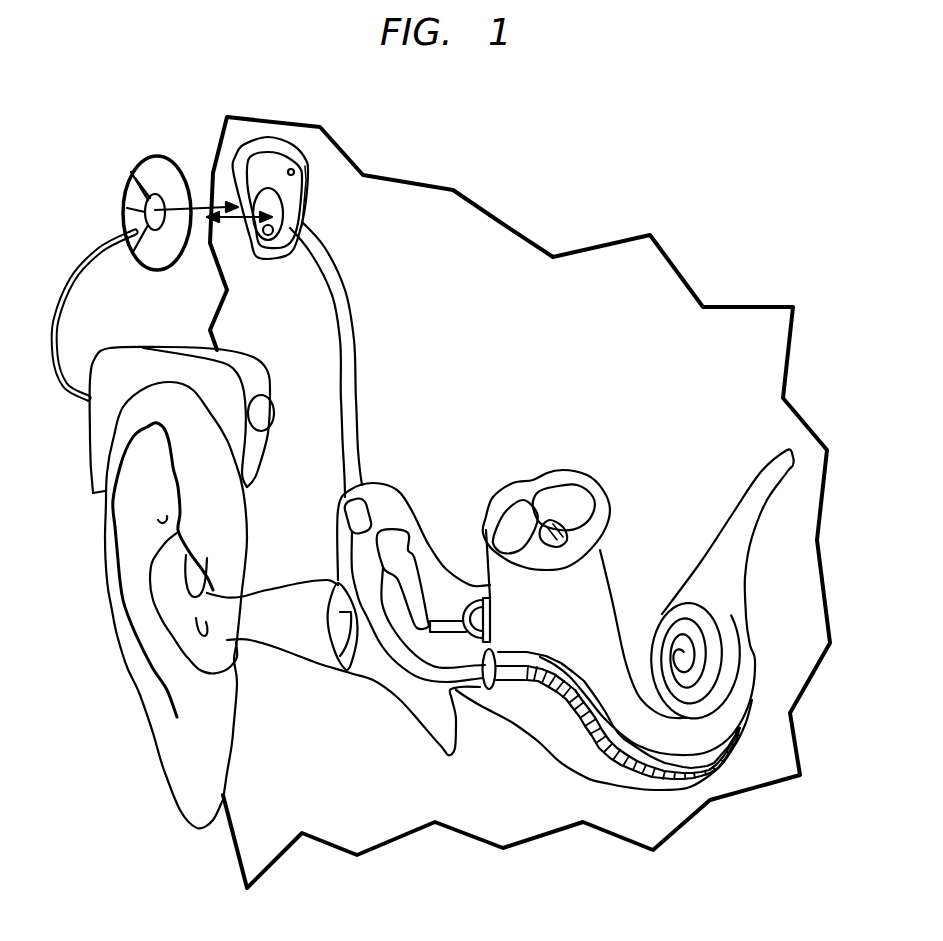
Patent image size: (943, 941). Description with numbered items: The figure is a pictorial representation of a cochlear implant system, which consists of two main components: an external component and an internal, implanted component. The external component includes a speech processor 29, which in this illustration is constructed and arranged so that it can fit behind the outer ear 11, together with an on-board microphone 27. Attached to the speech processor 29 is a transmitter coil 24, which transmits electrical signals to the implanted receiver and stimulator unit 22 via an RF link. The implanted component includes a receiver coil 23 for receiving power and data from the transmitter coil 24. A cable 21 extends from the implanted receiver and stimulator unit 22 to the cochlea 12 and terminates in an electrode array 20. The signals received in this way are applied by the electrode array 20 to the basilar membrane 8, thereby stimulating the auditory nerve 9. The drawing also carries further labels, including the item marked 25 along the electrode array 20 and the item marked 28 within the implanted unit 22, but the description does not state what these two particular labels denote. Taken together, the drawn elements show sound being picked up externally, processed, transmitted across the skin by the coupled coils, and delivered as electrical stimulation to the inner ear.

The basilar membrane 8 is at (538, 652).
The auditory nerve 9 is at (745, 487).
The outer ear 11 is at (176, 759).
The cochlea 12 is at (757, 670).
The electrode array 20 is at (598, 749).
The cable 21 is at (356, 372).
The implanted receiver and stimulator unit 22 is at (310, 205).
The receiver coil 23 is at (293, 176).
The transmitter coil 24 is at (125, 197).
The electrode contacts 25 is at (654, 778).
The microphone 27 is at (263, 422).
The magnet 28 is at (268, 236).
The speech processor 29 is at (97, 447).